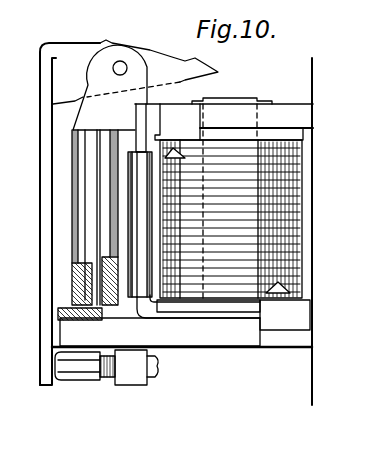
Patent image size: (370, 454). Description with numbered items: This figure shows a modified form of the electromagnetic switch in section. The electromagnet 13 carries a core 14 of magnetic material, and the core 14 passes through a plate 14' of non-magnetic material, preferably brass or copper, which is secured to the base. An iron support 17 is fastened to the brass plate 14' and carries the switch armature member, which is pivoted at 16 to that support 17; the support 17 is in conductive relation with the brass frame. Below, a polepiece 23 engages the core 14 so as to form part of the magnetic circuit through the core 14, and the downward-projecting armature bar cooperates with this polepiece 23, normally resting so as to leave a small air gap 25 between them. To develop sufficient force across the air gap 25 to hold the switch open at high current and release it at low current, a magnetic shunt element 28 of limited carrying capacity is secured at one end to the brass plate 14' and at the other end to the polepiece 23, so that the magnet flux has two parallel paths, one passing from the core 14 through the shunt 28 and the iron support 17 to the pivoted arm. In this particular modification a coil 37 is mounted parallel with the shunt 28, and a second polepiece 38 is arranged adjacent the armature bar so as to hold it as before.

The electromagnet 13 is at (302, 182).
The core 14 is at (224, 184).
The plate 14' is at (256, 124).
The pivot 16 is at (113, 68).
The iron support 17 is at (145, 85).
The polepiece 23 is at (252, 340).
The air gap 25 is at (53, 346).
The magnetic shunt element 28 is at (138, 300).
The coil 37 is at (82, 228).
The polepiece 38 is at (60, 311).